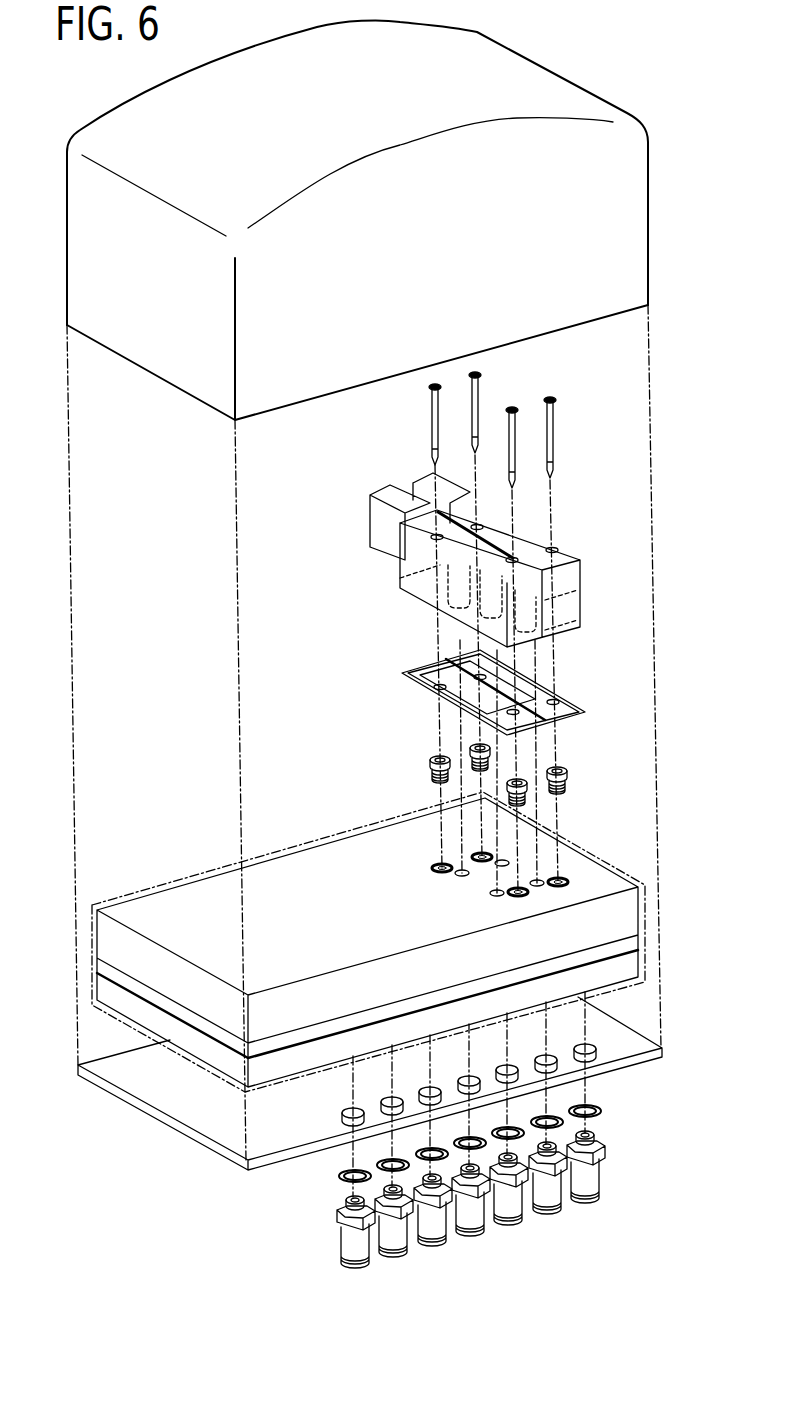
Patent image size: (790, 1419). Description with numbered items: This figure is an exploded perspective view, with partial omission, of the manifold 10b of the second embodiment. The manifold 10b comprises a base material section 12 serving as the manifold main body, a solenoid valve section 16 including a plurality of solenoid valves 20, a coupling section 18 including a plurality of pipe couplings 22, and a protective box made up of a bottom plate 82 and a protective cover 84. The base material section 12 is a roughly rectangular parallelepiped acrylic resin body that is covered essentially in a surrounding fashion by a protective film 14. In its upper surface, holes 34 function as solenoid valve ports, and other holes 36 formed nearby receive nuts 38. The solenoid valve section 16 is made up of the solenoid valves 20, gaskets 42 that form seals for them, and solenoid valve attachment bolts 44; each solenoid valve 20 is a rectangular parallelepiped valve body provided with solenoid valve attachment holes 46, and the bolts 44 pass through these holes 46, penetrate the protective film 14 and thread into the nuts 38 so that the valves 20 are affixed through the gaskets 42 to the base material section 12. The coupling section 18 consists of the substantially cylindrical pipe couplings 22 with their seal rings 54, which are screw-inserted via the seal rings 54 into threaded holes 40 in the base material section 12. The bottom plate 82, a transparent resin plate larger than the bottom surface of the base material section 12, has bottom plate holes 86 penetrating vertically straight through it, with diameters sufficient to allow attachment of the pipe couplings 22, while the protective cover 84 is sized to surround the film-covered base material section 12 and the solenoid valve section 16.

The manifold 10b is at (97, 83).
The base material section 12 is at (368, 942).
The protective film 14 is at (116, 1017).
The solenoid valve section 16 is at (642, 481).
The coupling section 18 is at (501, 1207).
The solenoid valve 20 is at (498, 560).
The pipe coupling 22 is at (587, 1177).
The holes 34 is at (457, 876).
The other holes 36 is at (561, 876).
The nut 38 is at (568, 768).
The threaded hole 40 is at (597, 990).
The gasket 42 is at (565, 702).
The solenoid valve attachment bolt 44 is at (553, 427).
The solenoid valve attachment hole 46 is at (554, 548).
The seal ring 54 is at (599, 1108).
The bottom plate 82 is at (392, 1094).
The protective cover 84 is at (648, 220).
The bottom plate hole 86 is at (594, 1046).